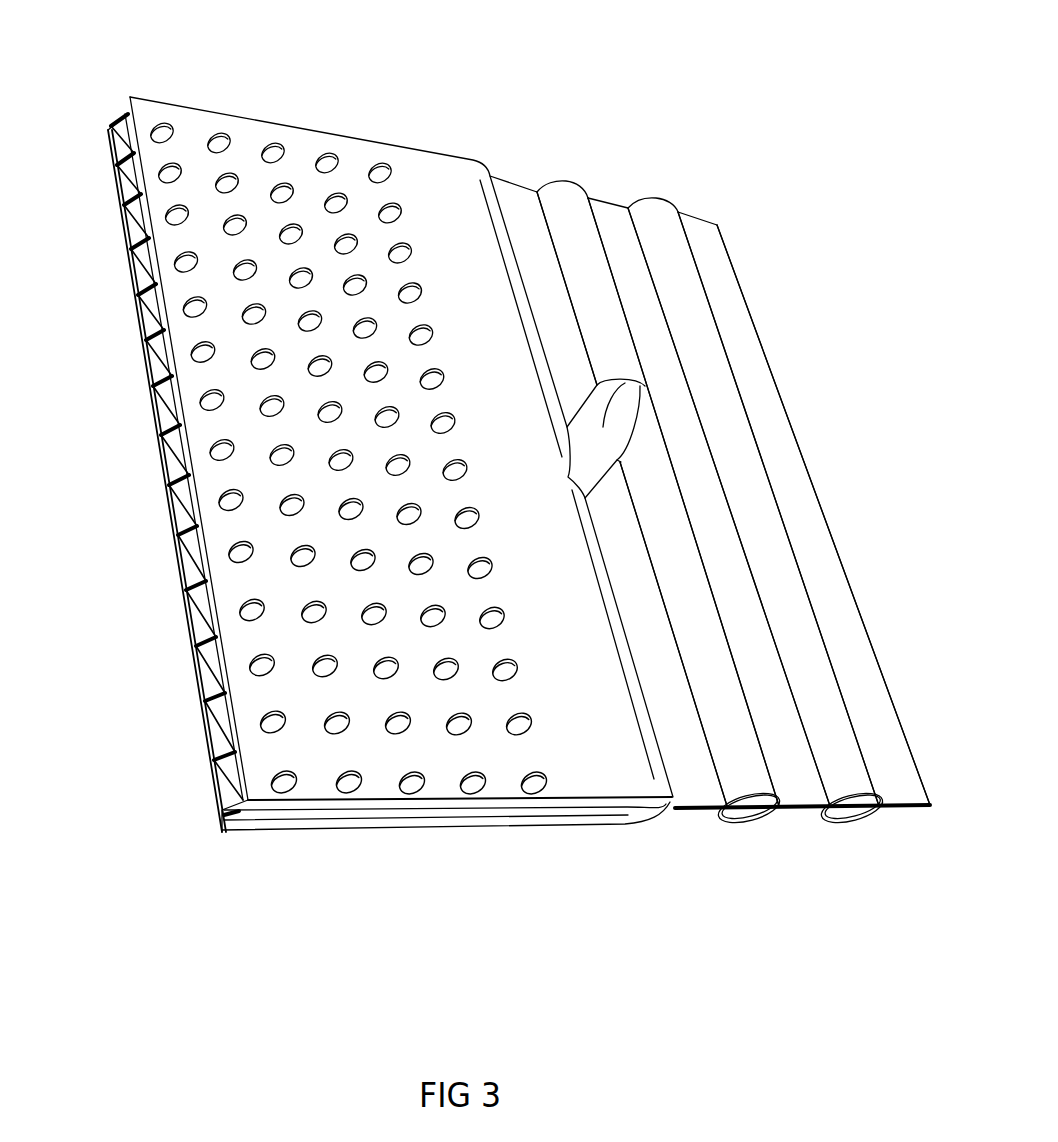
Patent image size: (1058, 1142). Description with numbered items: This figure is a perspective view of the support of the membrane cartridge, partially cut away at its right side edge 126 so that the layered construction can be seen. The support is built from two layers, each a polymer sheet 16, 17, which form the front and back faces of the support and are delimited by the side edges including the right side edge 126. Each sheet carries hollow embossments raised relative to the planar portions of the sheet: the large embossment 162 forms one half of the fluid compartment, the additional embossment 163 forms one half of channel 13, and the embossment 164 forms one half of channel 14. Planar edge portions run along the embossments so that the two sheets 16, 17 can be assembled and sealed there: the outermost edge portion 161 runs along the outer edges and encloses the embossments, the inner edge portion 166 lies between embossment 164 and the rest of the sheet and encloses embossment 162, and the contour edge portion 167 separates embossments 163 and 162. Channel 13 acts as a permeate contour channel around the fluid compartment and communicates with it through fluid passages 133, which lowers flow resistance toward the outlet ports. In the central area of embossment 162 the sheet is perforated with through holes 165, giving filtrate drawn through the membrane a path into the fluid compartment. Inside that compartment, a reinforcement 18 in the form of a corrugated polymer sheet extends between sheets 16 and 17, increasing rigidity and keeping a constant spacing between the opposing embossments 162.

The embossment 162 is at (433, 197).
The through holes 165 is at (272, 143).
The embossment 163 is at (558, 188).
The embossment 164 is at (667, 195).
The contour edge portion 167 is at (558, 332).
The fluid passages 133 is at (605, 387).
The inner edge portion 166 is at (702, 473).
The outermost edge portion 161 is at (804, 517).
The right side edge 126 is at (860, 604).
The channel 13 is at (753, 813).
The channel 14 is at (860, 813).
The polymer sheet 16 is at (193, 455).
The reinforcement 18 is at (193, 532).
The polymer sheet 17 is at (187, 617).